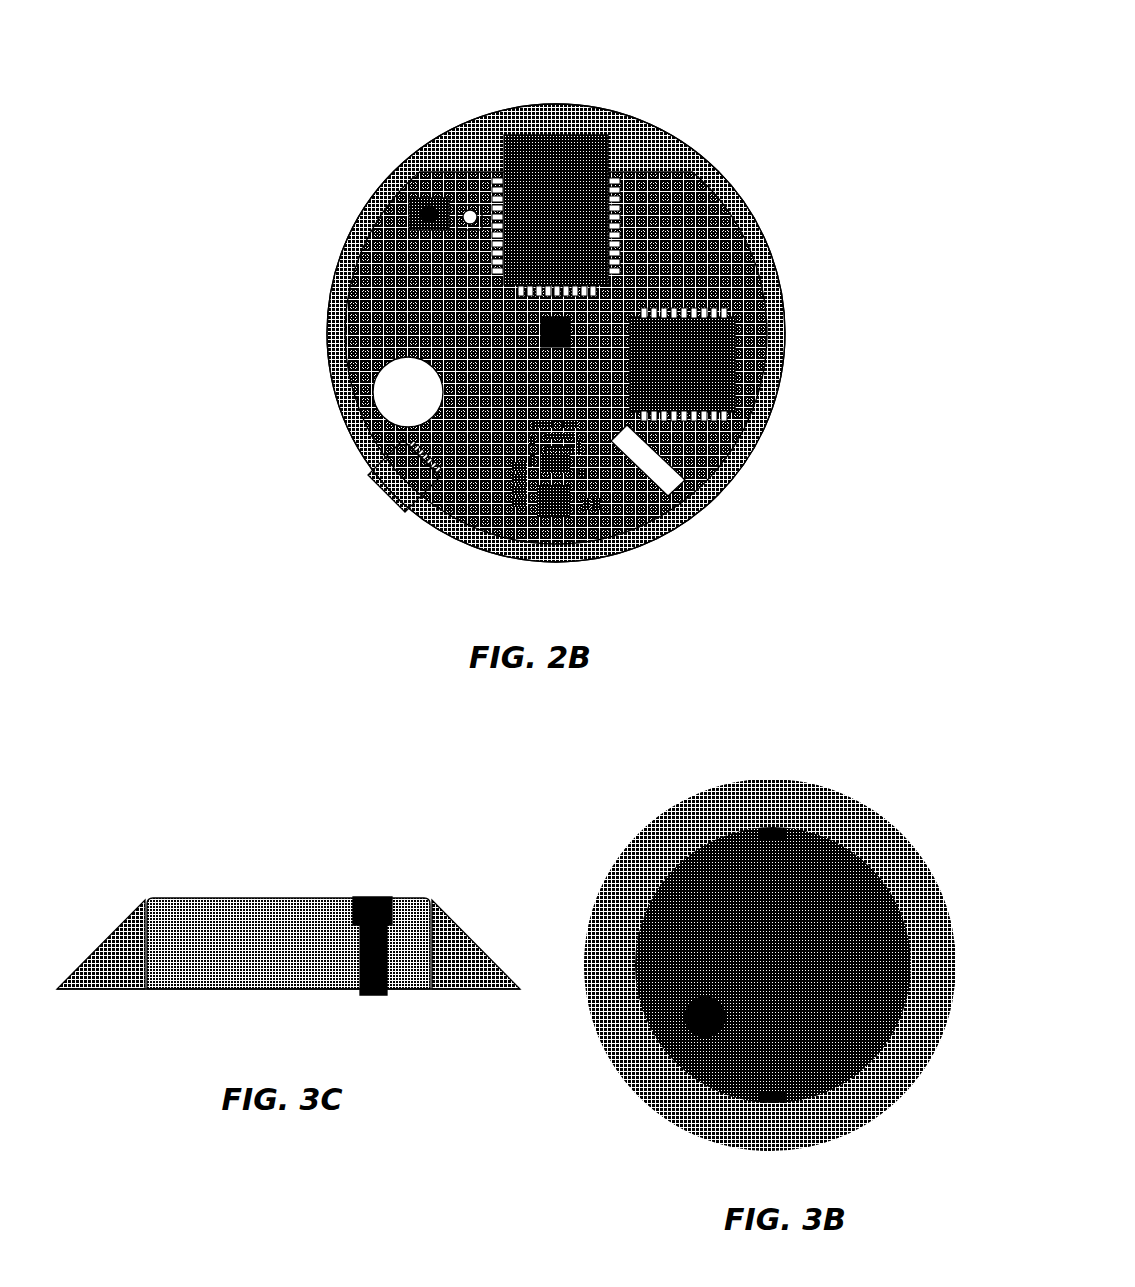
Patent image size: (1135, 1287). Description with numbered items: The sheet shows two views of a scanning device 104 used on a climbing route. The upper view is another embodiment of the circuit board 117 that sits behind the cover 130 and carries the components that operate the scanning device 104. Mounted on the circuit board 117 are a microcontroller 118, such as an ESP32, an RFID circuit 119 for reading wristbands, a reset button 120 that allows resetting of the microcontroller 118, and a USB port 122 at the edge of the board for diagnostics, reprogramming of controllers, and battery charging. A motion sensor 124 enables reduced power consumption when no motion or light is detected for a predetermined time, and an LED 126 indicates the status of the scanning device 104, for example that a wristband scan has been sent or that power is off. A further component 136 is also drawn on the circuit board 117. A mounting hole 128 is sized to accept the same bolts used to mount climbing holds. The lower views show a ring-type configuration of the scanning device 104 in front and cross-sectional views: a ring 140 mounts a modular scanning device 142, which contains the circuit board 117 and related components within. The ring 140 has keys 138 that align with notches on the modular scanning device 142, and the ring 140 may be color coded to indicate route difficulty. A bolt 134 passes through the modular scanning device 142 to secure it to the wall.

In FIG. 2B, the scanning device 104 is at (583, 106).
In FIG. 3C, the scanning device 104 is at (185, 880).
In FIG. 3B, the scanning device 104 is at (676, 772).
In FIG. 2B, the circuit board 117 is at (375, 262).
In FIG. 2B, the microcontroller 118 is at (570, 205).
In FIG. 2B, the RFID circuit 119 is at (582, 473).
In FIG. 2B, the reset button 120 is at (423, 207).
In FIG. 2B, the USB port 122 is at (372, 468).
In FIG. 2B, the motion sensor 124 is at (570, 323).
In FIG. 2B, the LED 126 is at (462, 205).
In FIG. 2B, the mounting hole 128 is at (404, 393).
In FIG. 2B, the cover 130 is at (748, 432).
In FIG. 3C, the bolt 134 is at (372, 897).
In FIG. 3B, the bolt 134 is at (690, 1028).
In FIG. 2B, the connector 136 is at (688, 492).
In FIG. 3B, the keys 138 is at (767, 1090).
In FIG. 3C, the ring 140 is at (128, 977).
In FIG. 3B, the ring 140 is at (866, 845).
In FIG. 3C, the modular scanning device 142 is at (262, 917).
In FIG. 3B, the modular scanning device 142 is at (805, 1030).